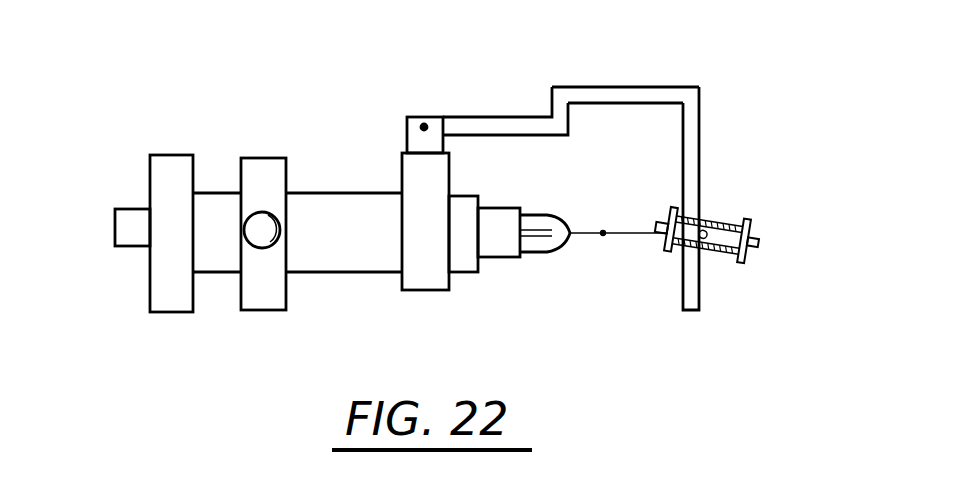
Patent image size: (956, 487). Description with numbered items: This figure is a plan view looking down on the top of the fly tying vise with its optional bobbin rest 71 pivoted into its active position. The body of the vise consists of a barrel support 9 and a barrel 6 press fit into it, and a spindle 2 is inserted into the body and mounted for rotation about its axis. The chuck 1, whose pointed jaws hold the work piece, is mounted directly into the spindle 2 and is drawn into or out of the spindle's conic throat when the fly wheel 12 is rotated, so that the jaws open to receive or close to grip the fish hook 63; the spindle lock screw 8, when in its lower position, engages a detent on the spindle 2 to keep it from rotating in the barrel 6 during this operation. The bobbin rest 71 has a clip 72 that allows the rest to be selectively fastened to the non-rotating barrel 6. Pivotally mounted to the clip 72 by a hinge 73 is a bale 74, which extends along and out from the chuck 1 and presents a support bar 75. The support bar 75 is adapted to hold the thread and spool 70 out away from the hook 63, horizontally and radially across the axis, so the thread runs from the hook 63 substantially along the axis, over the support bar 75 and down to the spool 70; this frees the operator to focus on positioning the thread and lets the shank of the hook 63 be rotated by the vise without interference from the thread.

The chuck 1 is at (537, 222).
The spindle 2 is at (503, 223).
The barrel 6 is at (325, 205).
The spindle lock screw 8 is at (257, 212).
The barrel support 9 is at (268, 172).
The fly wheel 12 is at (158, 188).
The fish hook 63 is at (593, 238).
The spool 70 is at (730, 223).
The bobbin rest 71 is at (518, 120).
The clip 72 is at (423, 273).
The hinge 73 is at (426, 126).
The bale 74 is at (604, 95).
The support bar 75 is at (695, 143).